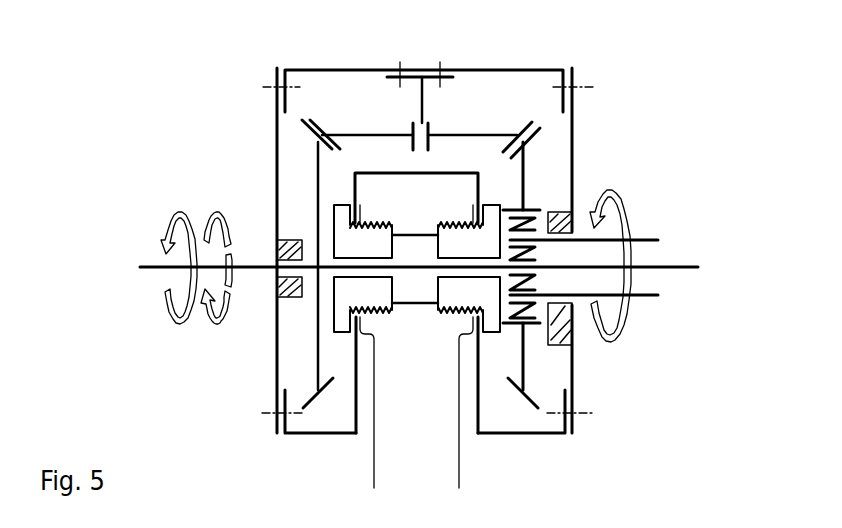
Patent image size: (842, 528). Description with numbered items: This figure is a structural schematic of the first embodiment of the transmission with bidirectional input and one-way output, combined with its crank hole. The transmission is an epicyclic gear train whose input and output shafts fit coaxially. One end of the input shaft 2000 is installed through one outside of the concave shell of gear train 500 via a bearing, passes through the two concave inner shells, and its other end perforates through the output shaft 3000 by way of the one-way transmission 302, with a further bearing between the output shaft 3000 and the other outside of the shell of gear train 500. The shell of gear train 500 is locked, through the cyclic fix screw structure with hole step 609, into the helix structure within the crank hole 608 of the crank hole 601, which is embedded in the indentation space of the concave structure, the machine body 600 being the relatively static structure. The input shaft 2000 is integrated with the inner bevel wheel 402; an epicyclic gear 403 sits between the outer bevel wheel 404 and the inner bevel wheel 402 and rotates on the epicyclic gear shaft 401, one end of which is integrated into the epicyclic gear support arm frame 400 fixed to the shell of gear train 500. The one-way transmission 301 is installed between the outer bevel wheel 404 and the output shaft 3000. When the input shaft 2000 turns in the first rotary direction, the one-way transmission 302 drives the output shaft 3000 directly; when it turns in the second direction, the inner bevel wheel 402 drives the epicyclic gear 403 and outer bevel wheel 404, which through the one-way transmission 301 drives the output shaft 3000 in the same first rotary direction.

The shell of gear train 500 is at (360, 68).
The input shaft 2000 is at (152, 268).
The output shaft 3000 is at (642, 238).
The epicyclic gear support arm frame 400 is at (428, 72).
The epicyclic gear shaft 401 is at (420, 110).
The inner bevel wheel 402 is at (310, 135).
The epicyclic gear 403 is at (318, 128).
The outer bevel wheel 404 is at (530, 137).
The one-way transmission 301 is at (540, 214).
The one-way transmission 302 is at (530, 278).
The crank hole 608 is at (370, 223).
The cyclic fix screw structure with hole step 609 is at (447, 243).
The machine body 600 is at (433, 445).
The crank hole 601 is at (413, 305).